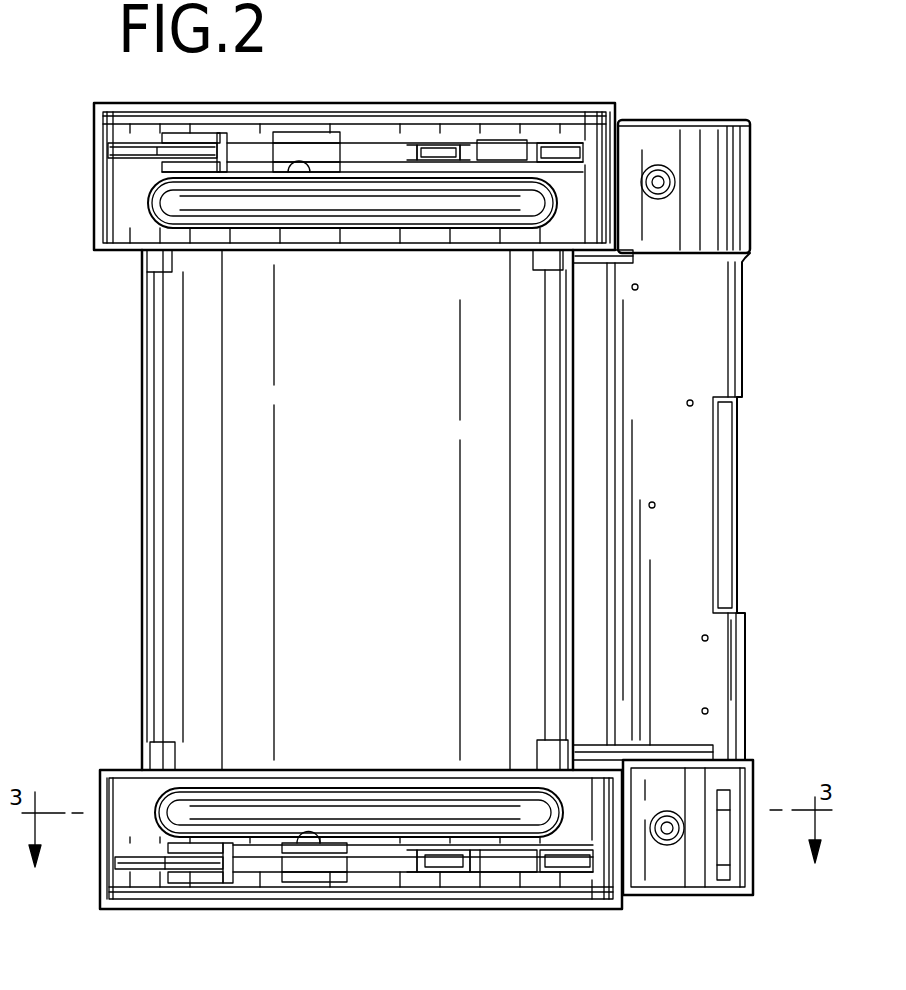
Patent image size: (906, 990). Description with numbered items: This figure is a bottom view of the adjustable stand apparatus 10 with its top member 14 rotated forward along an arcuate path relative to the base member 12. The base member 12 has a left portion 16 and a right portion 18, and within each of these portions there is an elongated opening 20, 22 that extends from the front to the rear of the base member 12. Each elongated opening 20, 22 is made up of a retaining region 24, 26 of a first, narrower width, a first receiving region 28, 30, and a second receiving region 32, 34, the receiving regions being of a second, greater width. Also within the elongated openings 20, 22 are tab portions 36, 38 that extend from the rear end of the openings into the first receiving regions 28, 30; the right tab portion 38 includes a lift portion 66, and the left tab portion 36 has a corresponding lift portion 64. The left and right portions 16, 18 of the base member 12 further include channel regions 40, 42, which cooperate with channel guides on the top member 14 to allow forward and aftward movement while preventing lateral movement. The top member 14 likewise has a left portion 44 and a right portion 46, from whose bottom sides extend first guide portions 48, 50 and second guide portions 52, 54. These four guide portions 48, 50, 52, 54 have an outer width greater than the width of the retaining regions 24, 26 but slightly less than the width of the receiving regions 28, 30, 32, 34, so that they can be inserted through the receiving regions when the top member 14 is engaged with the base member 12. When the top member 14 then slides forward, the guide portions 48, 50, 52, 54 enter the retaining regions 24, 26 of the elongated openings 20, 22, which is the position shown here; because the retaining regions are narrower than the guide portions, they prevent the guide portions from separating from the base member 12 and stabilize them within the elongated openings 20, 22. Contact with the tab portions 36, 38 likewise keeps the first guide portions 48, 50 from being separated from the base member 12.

The adjustable stand apparatus 10 is at (88, 507).
The base member 12 is at (142, 668).
The top member 14 is at (743, 660).
The left portion of base member 16 is at (97, 152).
The right portion of base member 18 is at (100, 858).
The elongated opening 20 is at (362, 143).
The elongated opening 22 is at (388, 872).
The retaining region 24 is at (500, 140).
The retaining region 26 is at (510, 872).
The first receiving region 28 is at (218, 137).
The first receiving region 30 is at (185, 883).
The second receiving region 32 is at (318, 132).
The second receiving region 34 is at (320, 882).
The tab portion 36 is at (110, 148).
The tab portion 38 is at (120, 858).
The channel region 40 is at (150, 205).
The channel region 42 is at (160, 790).
The left portion of top member 44 is at (752, 195).
The right portion of top member 46 is at (755, 790).
The first guide portion 48 is at (442, 143).
The first guide portion 50 is at (450, 872).
The second guide portion 52 is at (577, 143).
The second guide portion 54 is at (575, 872).
The lift portion 64 is at (207, 137).
The lift portion 66 is at (223, 883).